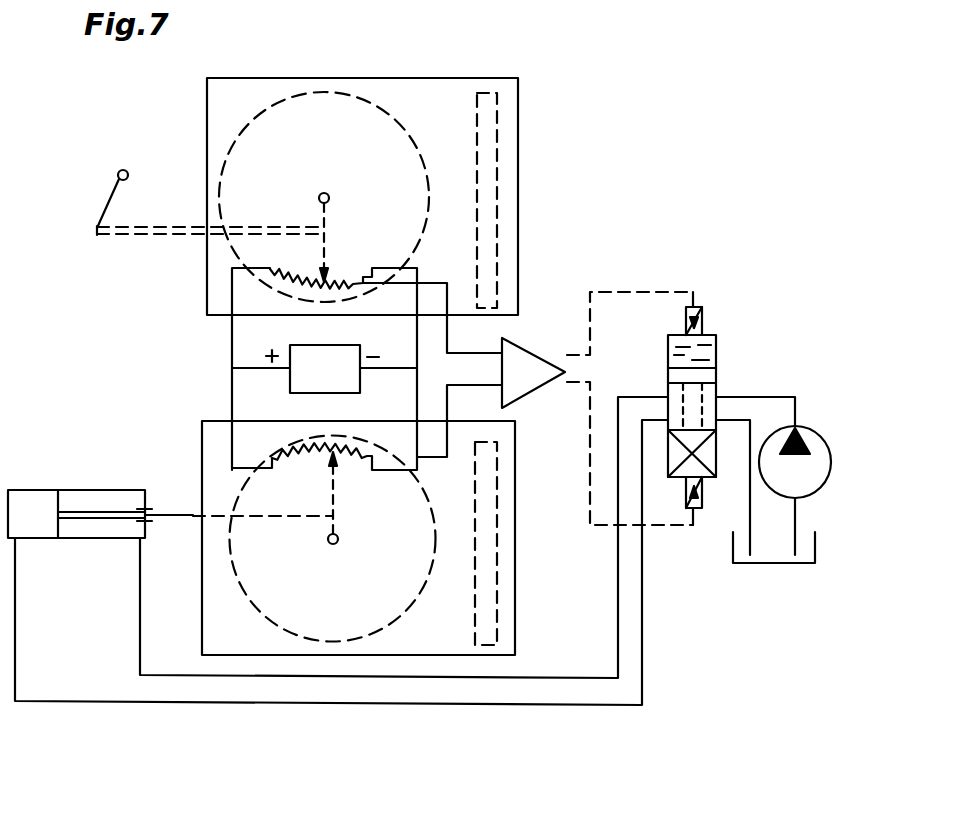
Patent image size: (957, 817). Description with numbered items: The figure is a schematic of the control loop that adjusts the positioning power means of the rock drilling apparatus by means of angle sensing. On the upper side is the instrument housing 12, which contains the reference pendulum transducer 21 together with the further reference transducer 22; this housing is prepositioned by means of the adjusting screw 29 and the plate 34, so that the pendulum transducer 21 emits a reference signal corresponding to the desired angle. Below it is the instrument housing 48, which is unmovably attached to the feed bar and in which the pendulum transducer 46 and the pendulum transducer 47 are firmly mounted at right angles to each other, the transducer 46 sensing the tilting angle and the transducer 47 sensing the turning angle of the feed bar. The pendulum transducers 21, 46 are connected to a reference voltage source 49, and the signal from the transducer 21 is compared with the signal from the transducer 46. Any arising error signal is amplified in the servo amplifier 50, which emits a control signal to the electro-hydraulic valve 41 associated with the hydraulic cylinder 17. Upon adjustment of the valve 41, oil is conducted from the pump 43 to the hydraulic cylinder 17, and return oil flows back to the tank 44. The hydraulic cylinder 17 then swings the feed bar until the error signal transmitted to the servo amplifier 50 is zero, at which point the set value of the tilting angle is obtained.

The instrument housing 12 is at (520, 160).
The hydraulic cylinder 17 is at (83, 490).
The pendulum transducer 21 is at (227, 160).
The reference transducer 22 is at (498, 242).
The adjusting screw 29 is at (110, 198).
The plate 34 is at (210, 230).
The electro-hydraulic valve 41 is at (716, 355).
The pump 43 is at (815, 428).
The tank 44 is at (760, 565).
The pendulum transducer 46 is at (247, 588).
The pendulum transducer 47 is at (497, 572).
The instrument housing 48 is at (202, 450).
The reference voltage source 49 is at (335, 345).
The servo amplifier 50 is at (550, 327).